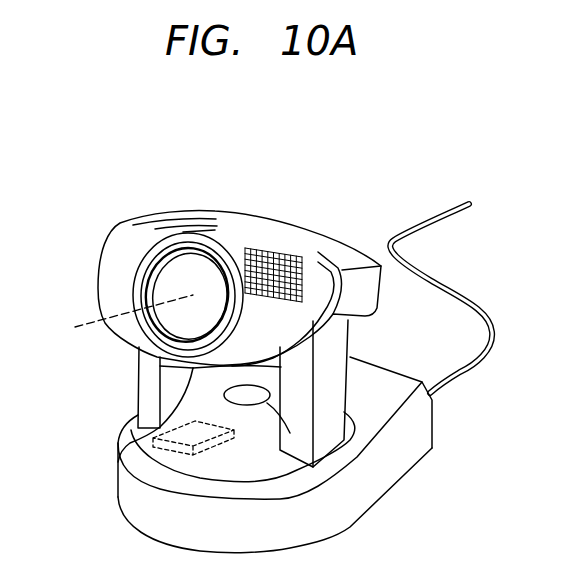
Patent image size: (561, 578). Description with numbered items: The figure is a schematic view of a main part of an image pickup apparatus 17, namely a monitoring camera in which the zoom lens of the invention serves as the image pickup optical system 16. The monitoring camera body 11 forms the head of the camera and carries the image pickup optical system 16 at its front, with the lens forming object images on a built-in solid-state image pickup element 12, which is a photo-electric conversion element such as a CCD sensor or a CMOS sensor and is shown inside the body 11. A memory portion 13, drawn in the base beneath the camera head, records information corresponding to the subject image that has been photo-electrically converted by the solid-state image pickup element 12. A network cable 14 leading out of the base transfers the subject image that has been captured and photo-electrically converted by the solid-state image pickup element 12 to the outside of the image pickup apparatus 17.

The monitoring camera body 11 is at (108, 257).
The solid-state image pickup element 12 is at (288, 262).
The memory portion 13 is at (151, 438).
The network cable 14 is at (437, 211).
The image pickup optical system 16 is at (207, 273).
The image pickup apparatus 17 is at (285, 157).